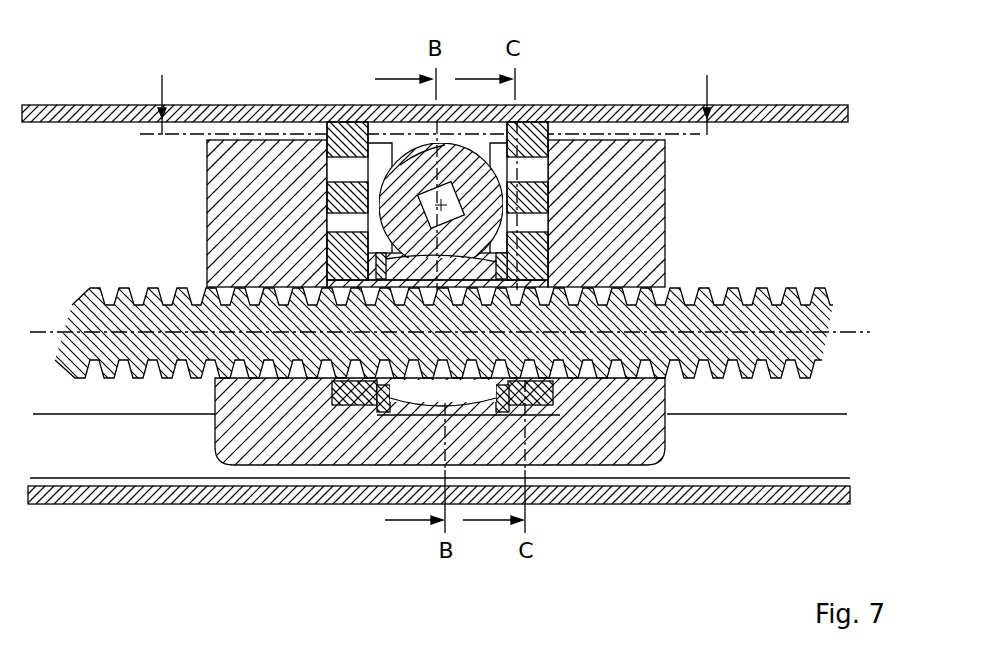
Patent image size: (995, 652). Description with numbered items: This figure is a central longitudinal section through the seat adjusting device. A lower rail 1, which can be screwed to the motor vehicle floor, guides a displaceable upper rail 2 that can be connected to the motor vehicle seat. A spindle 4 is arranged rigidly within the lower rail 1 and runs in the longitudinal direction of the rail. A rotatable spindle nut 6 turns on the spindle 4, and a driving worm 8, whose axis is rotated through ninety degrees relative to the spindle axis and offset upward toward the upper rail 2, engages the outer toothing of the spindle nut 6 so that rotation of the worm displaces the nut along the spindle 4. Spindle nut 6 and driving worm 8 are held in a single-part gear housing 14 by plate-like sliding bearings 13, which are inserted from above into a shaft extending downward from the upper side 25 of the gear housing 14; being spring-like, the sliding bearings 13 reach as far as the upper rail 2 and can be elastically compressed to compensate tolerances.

The lower rail 1 is at (633, 492).
The upper rail 2 is at (666, 105).
The spindle 4 is at (772, 300).
The spindle nut 6 is at (392, 402).
The driving worm 8 is at (430, 170).
The sliding bearings 13 is at (346, 141).
The gear housing 14 is at (620, 196).
The upper side 25 is at (603, 130).